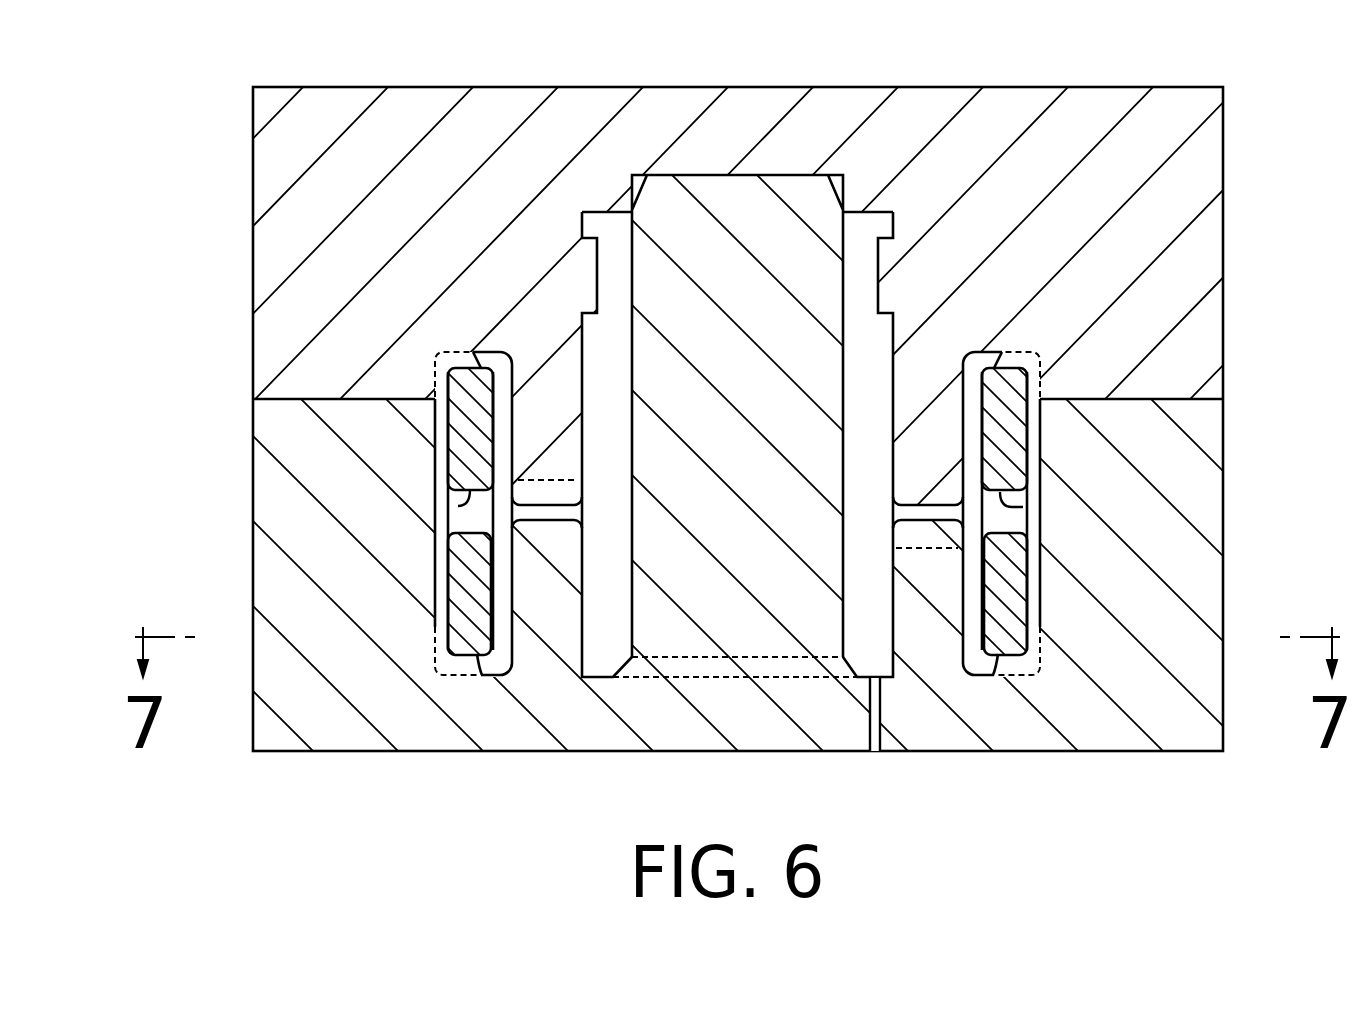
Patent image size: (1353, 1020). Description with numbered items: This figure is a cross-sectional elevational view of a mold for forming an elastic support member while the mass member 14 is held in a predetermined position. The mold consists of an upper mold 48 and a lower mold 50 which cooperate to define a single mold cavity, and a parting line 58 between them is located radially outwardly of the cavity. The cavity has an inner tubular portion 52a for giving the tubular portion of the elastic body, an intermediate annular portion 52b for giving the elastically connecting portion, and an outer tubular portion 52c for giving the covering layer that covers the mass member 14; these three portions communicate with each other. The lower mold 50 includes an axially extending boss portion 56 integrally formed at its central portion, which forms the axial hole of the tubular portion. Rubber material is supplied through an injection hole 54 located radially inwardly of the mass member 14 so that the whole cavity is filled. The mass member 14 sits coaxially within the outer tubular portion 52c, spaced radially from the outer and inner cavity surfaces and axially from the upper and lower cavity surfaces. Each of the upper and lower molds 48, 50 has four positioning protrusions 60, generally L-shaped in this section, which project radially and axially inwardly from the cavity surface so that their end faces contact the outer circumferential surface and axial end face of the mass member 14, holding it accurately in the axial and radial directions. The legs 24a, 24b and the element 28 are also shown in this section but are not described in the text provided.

The mass member 14 is at (1048, 435).
The first leg of seal 24a is at (463, 490).
The second leg of seal 24b is at (1023, 507).
The seal body ring 28 is at (1000, 587).
The upper mold 48 is at (1085, 125).
The lower mold 50 is at (1114, 742).
The inner tubular portion 52a is at (597, 645).
The intermediate annular portion 52b is at (551, 515).
The outer tubular portion 52c is at (440, 570).
The injection hole 54 is at (880, 697).
The boss portion 56 is at (820, 291).
The parting line 58 is at (323, 378).
The positioning protrusion 60 is at (470, 355).